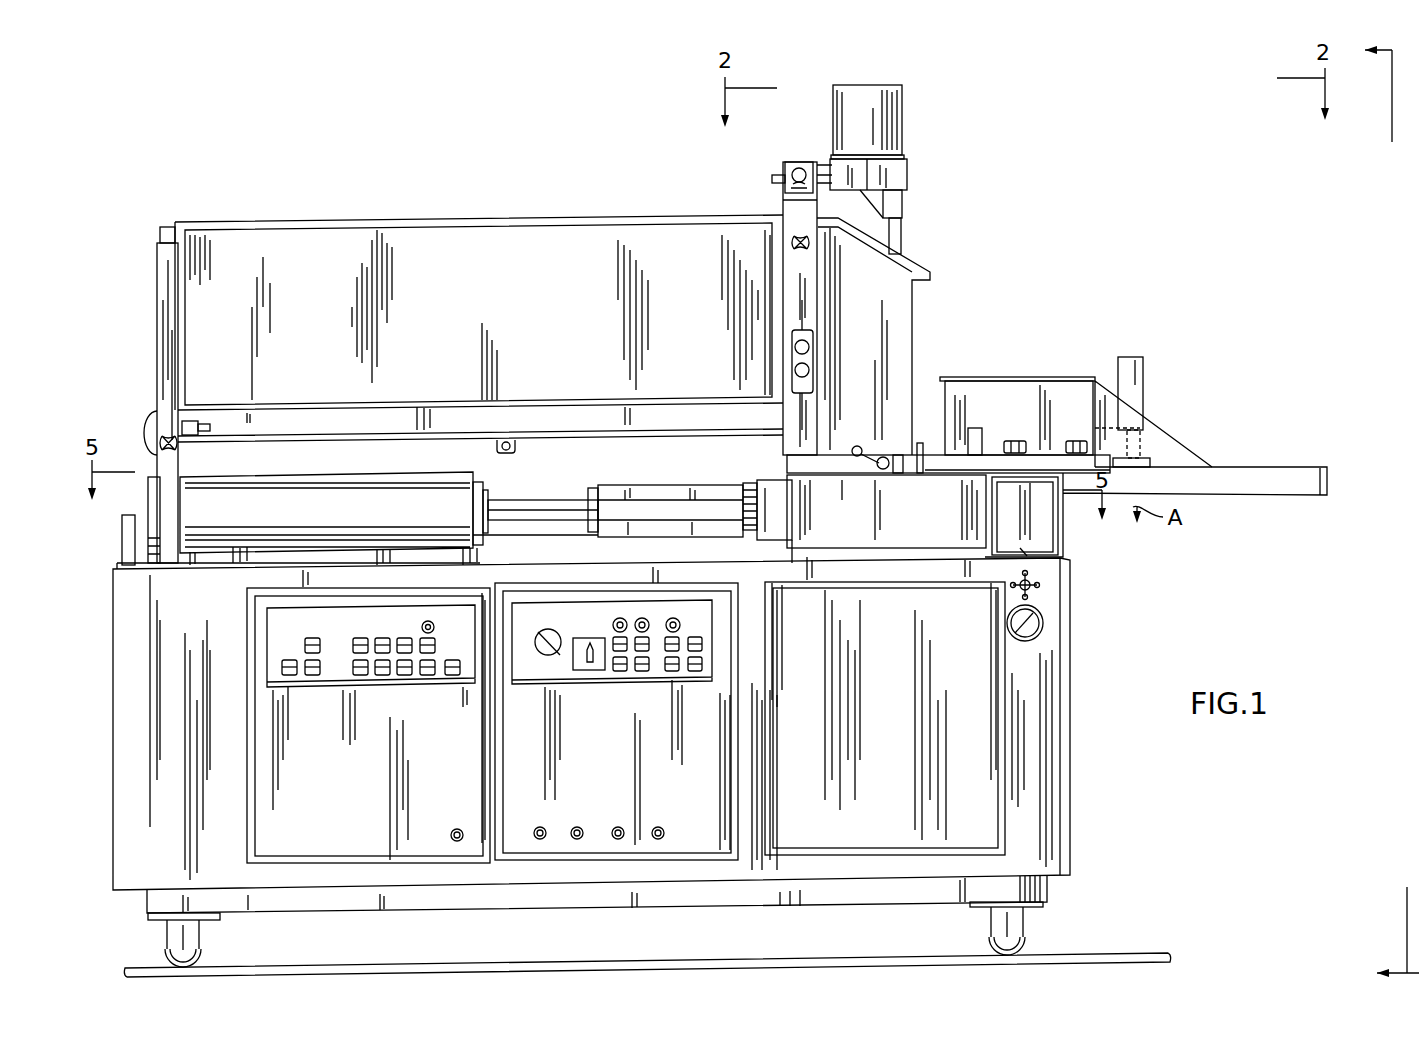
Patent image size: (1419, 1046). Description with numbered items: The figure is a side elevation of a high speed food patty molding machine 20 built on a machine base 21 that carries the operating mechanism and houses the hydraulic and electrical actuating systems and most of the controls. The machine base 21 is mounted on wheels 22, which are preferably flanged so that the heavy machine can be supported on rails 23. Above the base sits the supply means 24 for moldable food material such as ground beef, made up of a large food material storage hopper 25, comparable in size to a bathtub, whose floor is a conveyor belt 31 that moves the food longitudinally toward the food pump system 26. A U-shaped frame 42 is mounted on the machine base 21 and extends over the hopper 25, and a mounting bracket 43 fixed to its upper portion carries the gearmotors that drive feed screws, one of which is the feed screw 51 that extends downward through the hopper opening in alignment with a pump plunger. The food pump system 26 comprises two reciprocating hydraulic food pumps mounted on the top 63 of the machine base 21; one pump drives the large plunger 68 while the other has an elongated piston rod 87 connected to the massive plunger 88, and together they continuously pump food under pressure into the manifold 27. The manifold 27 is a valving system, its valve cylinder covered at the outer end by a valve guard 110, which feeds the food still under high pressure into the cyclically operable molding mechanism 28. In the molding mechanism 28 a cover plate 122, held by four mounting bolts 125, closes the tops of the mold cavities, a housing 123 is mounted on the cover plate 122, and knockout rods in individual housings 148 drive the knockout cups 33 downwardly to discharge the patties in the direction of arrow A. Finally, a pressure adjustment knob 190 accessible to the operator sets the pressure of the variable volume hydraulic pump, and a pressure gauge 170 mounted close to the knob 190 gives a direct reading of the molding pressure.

The high speed food patty molding machine 20 is at (1035, 244).
The machine base 21 is at (1058, 812).
The wheels 22 is at (207, 948).
The rails 23 is at (793, 947).
The supply means 24 is at (742, 191).
The food material storage hopper 25 is at (445, 247).
The food pump system 26 is at (745, 475).
The manifold 27 is at (1036, 524).
The molding mechanism 28 is at (1077, 369).
The conveyor belt 31 is at (236, 446).
The knockout cups 33 is at (1147, 462).
The U-shaped frame 42 is at (797, 308).
The mounting bracket 43 is at (903, 173).
The feed screw 51 is at (903, 243).
The top of machine base 63 is at (553, 563).
The plunger 68 is at (640, 488).
The piston rod 87 is at (557, 507).
The plunger 88 is at (777, 515).
The valve guard 110 is at (1027, 548).
The cover plate 122 is at (953, 458).
The housing 123 is at (1003, 390).
The mounting bolts 125 is at (1072, 442).
The housing 148 is at (1133, 370).
The pressure gauge 170 is at (1033, 632).
The pressure adjustment knob 190 is at (1037, 590).